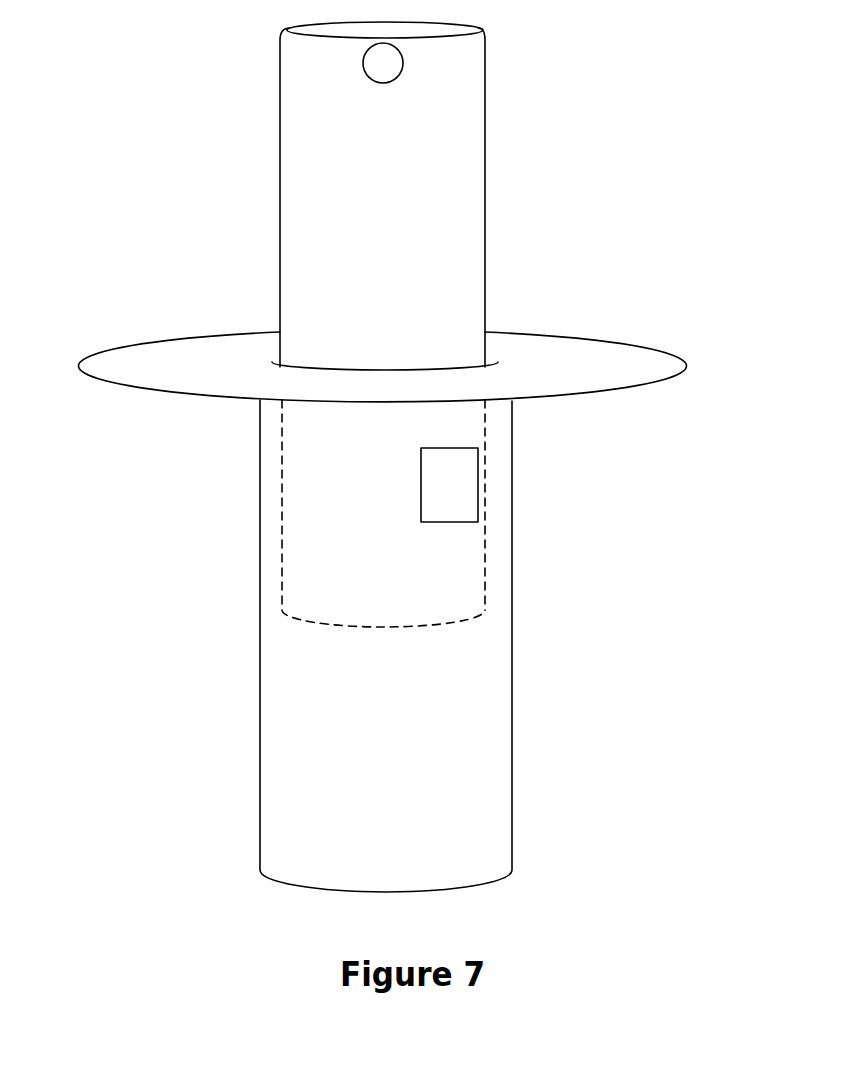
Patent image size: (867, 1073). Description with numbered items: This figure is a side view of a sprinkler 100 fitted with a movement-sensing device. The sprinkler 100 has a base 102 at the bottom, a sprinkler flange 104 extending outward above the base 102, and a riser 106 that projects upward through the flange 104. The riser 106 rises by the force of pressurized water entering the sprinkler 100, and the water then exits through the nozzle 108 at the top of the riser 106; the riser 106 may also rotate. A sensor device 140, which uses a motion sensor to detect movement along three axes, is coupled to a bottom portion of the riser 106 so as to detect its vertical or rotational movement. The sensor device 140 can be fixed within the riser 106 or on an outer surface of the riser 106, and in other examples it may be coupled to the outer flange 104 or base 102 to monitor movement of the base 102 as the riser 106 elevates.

The sprinkler 100 is at (140, 501).
The sprinkler base 102 is at (482, 703).
The sprinkler flange 104 is at (168, 392).
The riser 106 is at (280, 295).
The nozzle 108 is at (280, 110).
The sensor device 140 is at (478, 483).